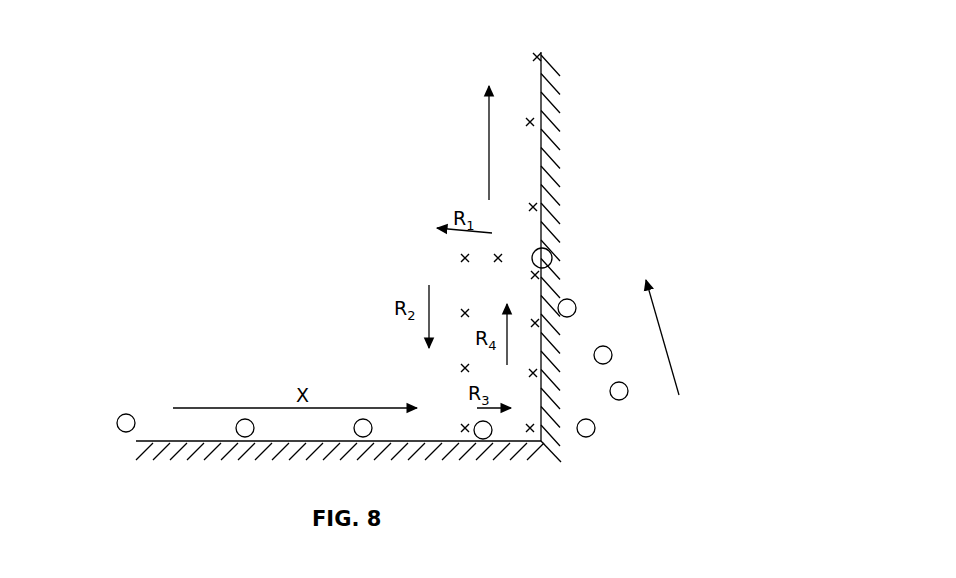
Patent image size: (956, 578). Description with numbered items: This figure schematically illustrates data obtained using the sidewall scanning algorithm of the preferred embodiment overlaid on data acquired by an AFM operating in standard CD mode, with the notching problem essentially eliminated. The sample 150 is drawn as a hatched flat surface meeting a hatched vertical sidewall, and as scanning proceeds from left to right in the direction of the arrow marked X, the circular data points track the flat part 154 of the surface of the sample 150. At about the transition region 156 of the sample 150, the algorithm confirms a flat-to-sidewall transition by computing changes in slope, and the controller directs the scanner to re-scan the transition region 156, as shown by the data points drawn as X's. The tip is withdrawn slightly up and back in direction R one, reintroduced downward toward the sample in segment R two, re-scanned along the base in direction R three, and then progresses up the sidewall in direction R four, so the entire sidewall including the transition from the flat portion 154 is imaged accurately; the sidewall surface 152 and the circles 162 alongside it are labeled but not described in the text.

The sample 150 is at (578, 109).
The wall surface 152 is at (541, 79).
The flat part of the sample surface 154 is at (169, 441).
The transition region 156 is at (564, 467).
The bubbles 162 is at (595, 328).